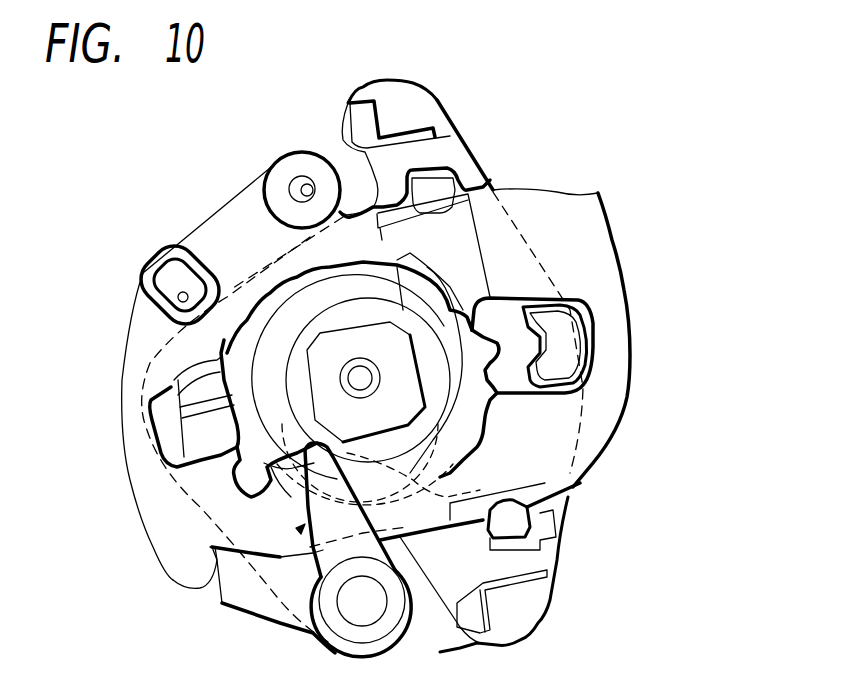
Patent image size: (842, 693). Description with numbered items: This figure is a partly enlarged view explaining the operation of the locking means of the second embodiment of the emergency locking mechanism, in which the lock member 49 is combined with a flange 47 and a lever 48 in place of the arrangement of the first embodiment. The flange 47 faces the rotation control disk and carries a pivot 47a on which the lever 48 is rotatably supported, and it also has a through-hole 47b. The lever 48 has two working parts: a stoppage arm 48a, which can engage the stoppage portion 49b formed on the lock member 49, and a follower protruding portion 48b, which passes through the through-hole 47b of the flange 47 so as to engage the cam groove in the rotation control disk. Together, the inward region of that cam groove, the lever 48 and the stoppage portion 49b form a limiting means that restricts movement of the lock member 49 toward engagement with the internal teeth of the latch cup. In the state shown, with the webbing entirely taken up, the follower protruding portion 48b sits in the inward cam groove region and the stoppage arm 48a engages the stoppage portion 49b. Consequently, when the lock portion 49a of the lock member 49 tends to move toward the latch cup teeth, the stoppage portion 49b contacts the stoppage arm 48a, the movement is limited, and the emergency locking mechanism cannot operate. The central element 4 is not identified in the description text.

The hub / shaft 4 is at (352, 343).
The flange 47 is at (413, 110).
The pivot 47a is at (360, 610).
The through-hole 47b is at (284, 457).
The lever 48 is at (300, 530).
The stoppage arm 48a is at (243, 582).
The follower protruding portion 48b is at (450, 473).
The lock member 49 is at (228, 232).
The lock portion 49a is at (587, 208).
The stoppage portion 49b is at (213, 587).